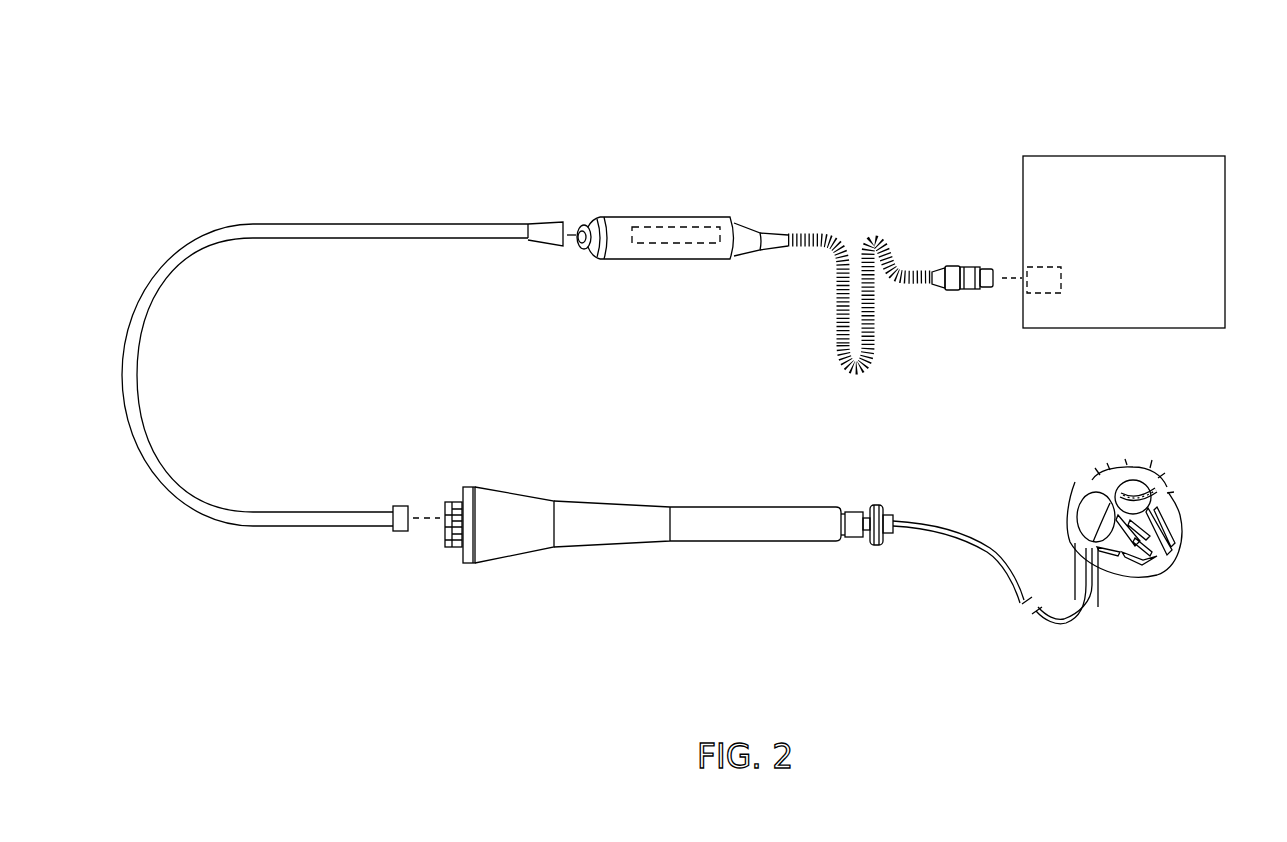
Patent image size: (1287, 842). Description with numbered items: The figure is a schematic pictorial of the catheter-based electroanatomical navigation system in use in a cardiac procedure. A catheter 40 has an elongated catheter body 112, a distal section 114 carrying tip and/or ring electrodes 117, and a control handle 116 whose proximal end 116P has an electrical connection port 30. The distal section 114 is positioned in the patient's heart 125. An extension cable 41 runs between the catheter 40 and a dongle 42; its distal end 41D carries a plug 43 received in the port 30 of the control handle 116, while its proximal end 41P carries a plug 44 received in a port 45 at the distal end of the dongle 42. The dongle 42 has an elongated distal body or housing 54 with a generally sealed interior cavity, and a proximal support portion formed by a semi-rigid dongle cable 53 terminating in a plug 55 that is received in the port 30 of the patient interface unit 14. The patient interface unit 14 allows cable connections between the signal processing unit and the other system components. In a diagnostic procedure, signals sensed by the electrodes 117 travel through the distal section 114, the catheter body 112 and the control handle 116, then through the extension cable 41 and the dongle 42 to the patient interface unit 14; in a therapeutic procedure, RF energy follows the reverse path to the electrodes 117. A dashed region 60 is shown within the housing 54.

The patient interface unit 14 is at (1225, 249).
The electrical connection port 30 is at (1045, 293).
The catheter 40 is at (751, 560).
The extension cable 41 is at (143, 297).
The proximal end of extension cable 41P is at (481, 240).
The distal end of extension cable 41D is at (352, 510).
The dongle 42 is at (800, 233).
The plug 43 is at (403, 506).
The plug 44 is at (541, 222).
The port 45 is at (581, 228).
The dongle cable 53 is at (869, 238).
The housing 54 is at (728, 217).
The plug 55 is at (984, 267).
The sensor in handle 60 is at (667, 227).
The catheter body 112 is at (909, 533).
The distal section 114 is at (1133, 492).
The control handle 116 is at (621, 500).
The proximal end of control handle 116P is at (475, 487).
The tip and/or ring electrodes 117 is at (1157, 491).
The heart 125 is at (1185, 530).